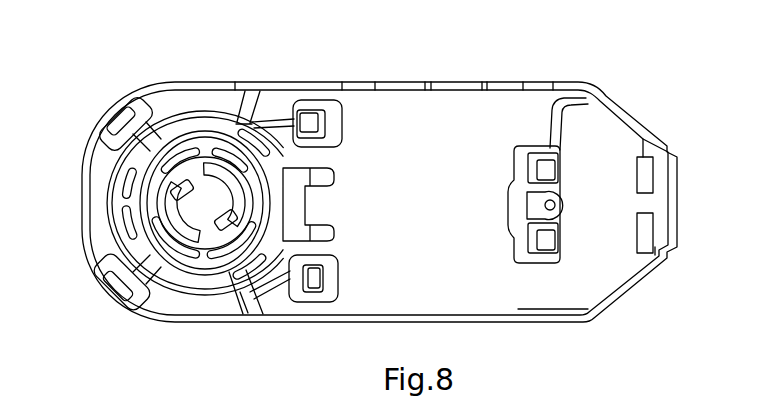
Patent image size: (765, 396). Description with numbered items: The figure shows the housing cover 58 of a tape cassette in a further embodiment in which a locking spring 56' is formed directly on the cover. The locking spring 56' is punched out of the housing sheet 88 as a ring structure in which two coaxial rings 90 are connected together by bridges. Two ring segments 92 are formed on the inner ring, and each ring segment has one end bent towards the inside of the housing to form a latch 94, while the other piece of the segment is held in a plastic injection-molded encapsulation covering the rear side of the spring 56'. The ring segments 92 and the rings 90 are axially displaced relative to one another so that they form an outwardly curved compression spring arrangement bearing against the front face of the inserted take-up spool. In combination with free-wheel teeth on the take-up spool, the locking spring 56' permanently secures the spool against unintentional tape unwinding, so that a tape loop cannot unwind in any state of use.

The housing sheet 88 is at (393, 120).
The housing cover 58 is at (478, 77).
The coaxial rings 90 is at (183, 247).
The ring segments 92 is at (177, 198).
The latch 94 is at (203, 232).
The locking spring 56' is at (187, 228).